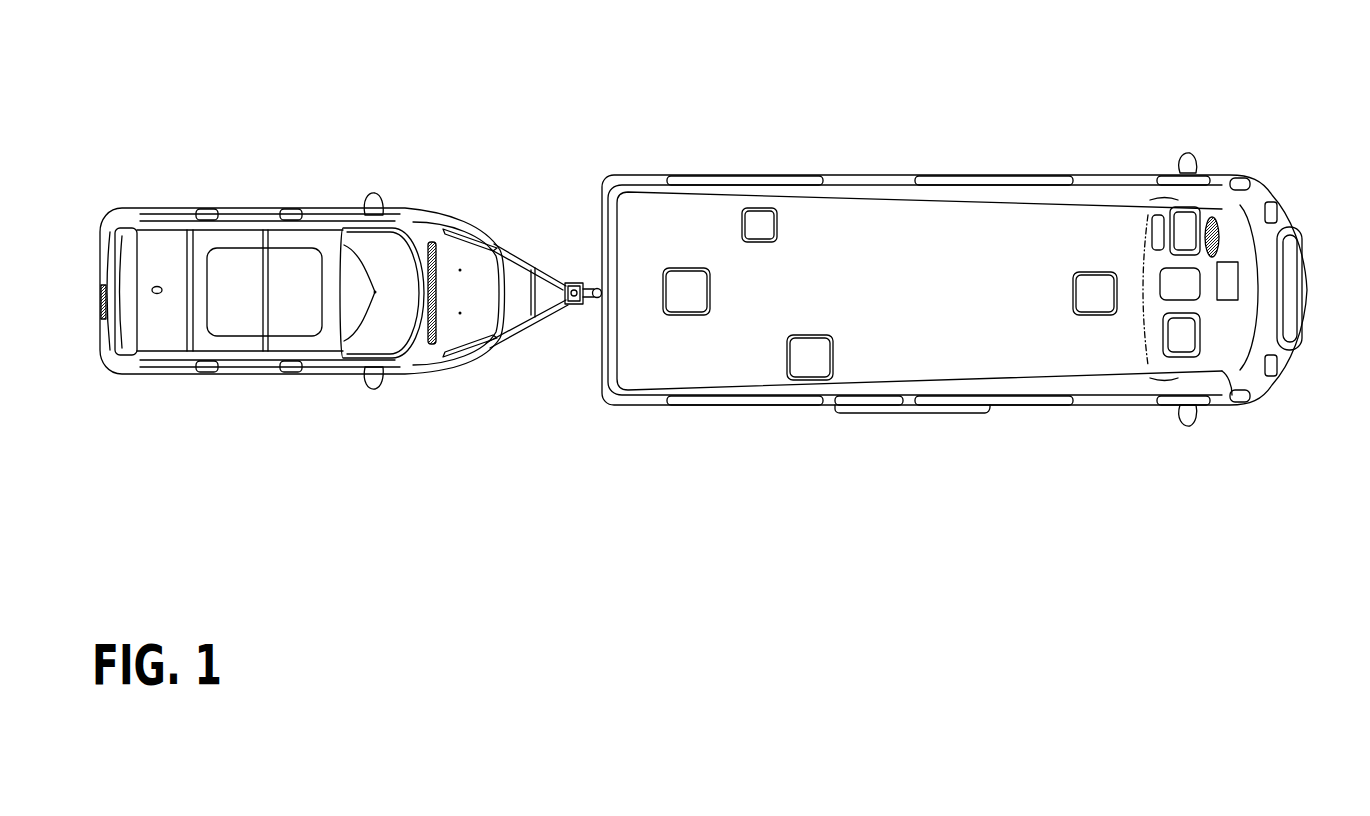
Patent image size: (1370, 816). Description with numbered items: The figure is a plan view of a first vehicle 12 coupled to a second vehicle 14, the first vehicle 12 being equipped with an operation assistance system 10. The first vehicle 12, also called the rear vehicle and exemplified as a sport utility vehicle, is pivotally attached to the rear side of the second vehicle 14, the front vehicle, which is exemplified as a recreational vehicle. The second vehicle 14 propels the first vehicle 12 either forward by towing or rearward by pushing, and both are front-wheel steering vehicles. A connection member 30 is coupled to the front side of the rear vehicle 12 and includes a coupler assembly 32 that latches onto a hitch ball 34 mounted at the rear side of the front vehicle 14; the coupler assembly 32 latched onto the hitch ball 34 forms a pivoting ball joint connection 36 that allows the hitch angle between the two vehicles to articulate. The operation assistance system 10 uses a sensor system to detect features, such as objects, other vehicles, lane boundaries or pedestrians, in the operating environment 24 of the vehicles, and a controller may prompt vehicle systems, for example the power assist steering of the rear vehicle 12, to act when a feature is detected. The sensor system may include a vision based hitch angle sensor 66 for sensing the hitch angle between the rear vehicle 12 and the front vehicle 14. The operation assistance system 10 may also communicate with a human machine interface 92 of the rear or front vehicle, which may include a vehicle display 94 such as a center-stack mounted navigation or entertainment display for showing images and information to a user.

The operation assistance system 10 is at (362, 160).
The first vehicle 12 is at (277, 204).
The second vehicle 14 is at (891, 172).
The operating environment 24 is at (632, 120).
The connection member 30 is at (520, 248).
The coupler assembly 32 is at (568, 309).
The hitch ball 34 is at (594, 285).
The pivoting ball joint connection 36 is at (593, 308).
The hitch angle sensor 66 is at (544, 288).
The human machine interface 92 is at (1280, 206).
The vehicle display 94 is at (1228, 272).